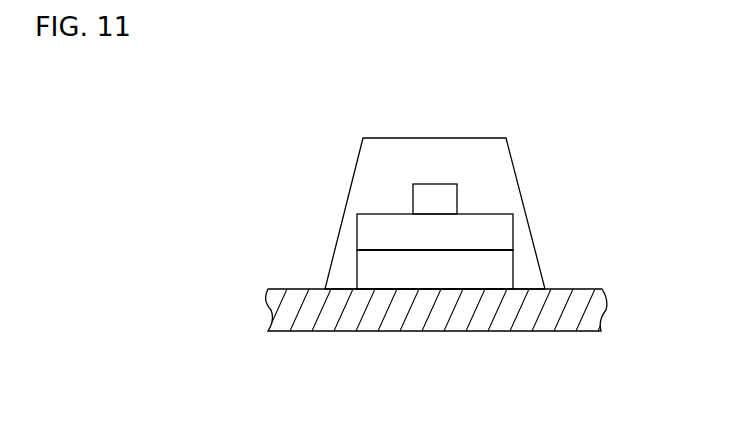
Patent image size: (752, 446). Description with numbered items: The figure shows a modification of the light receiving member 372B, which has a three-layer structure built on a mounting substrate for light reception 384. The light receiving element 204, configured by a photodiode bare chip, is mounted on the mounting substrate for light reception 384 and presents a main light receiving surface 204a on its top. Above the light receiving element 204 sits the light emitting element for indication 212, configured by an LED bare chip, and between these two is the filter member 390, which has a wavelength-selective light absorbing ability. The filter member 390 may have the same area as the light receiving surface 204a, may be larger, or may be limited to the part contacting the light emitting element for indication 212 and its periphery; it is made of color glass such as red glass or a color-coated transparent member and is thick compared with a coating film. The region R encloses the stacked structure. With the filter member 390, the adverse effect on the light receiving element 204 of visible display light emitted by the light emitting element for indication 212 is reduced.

The light receiving member 372B is at (320, 132).
The resin / sealing region R is at (394, 152).
The light emitting element for indication 212 is at (443, 197).
The filter member 390 is at (366, 234).
The light receiving element 204 is at (490, 277).
The main light receiving surface 204a is at (397, 246).
The mounting substrate for light reception 384 is at (567, 317).